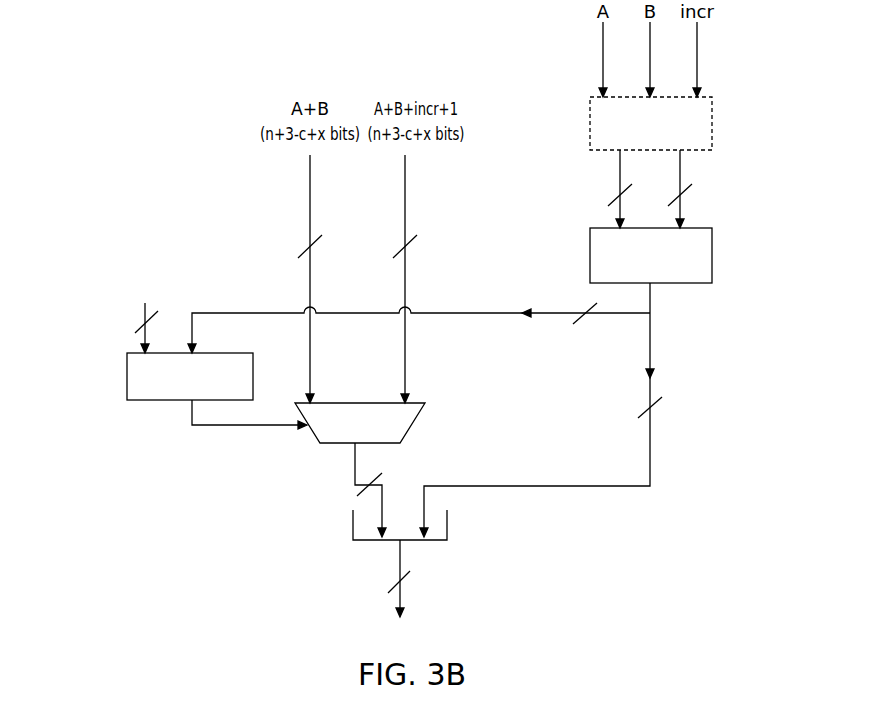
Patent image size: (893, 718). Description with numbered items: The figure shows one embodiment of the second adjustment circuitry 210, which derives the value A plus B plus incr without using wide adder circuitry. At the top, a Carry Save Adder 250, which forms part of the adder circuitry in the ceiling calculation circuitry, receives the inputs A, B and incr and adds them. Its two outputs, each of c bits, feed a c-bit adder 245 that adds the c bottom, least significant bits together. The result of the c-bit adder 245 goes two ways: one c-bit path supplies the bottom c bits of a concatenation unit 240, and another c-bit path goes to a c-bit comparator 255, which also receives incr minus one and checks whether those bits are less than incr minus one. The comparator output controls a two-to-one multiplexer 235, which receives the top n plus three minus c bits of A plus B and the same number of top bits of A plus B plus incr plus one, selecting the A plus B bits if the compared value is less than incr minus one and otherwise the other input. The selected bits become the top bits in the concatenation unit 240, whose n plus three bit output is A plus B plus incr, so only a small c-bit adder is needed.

The second adjustment circuitry 210 is at (102, 238).
The Carry Save Adder 250 is at (713, 120).
The c-bit adder 245 is at (713, 250).
The c-bit comparator 255 is at (150, 401).
The 2:1 multiplexer 235 is at (314, 434).
The concatenation unit 240 is at (448, 524).